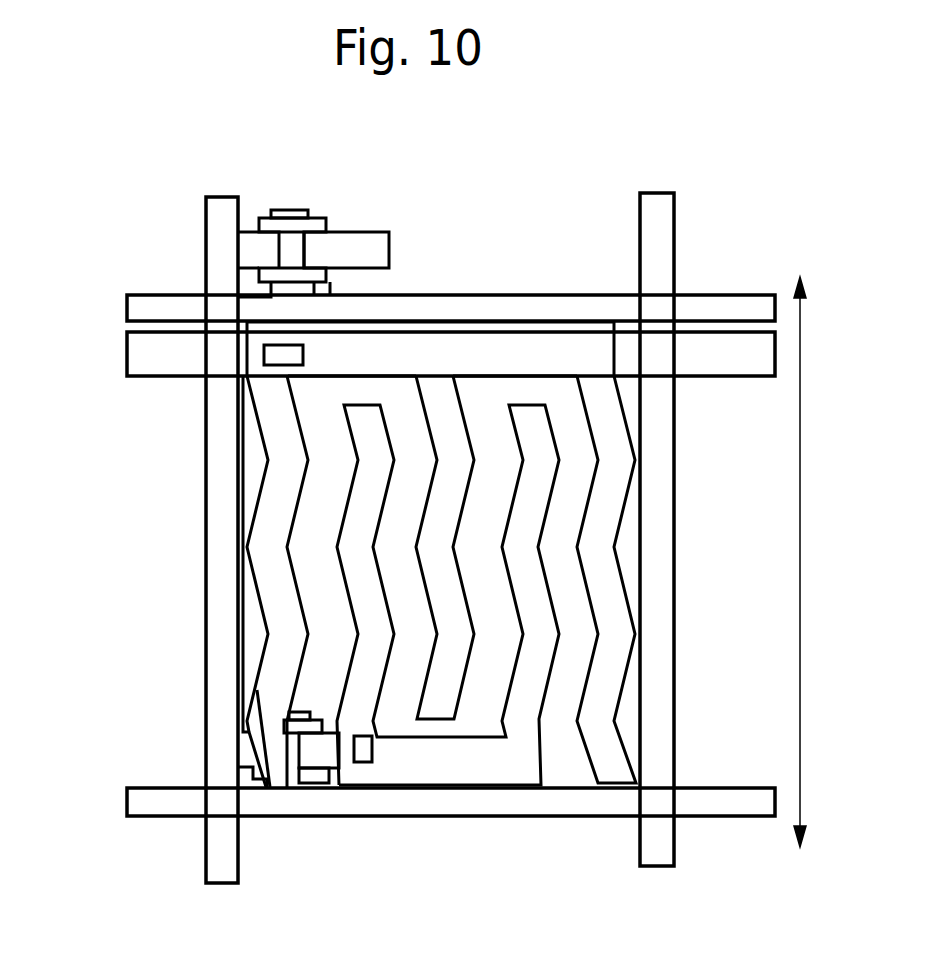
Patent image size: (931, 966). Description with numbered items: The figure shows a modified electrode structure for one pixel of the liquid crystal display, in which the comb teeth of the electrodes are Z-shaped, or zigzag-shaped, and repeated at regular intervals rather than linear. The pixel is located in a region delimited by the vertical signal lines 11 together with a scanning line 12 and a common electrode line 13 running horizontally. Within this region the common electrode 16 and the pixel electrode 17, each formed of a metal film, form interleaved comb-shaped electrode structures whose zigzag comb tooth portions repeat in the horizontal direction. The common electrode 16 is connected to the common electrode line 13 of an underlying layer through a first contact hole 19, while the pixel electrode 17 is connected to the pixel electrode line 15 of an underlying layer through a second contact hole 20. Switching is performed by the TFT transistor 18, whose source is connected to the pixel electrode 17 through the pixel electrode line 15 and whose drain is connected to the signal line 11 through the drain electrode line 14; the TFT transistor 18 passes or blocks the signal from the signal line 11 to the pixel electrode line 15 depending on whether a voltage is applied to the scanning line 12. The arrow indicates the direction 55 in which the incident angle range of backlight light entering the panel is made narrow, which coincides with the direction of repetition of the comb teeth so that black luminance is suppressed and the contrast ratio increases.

The signal line 11 is at (220, 246).
The scanning line 12 is at (138, 308).
The common electrode line 13 is at (138, 355).
The drain electrode line 14 is at (249, 752).
The pixel electrode line 15 is at (331, 757).
The common electrode 16 is at (278, 584).
The pixel electrode 17 is at (540, 607).
The TFT transistor 18 is at (326, 216).
The first contact hole 19 is at (297, 355).
The second contact hole 20 is at (362, 762).
The direction 55 is at (798, 686).